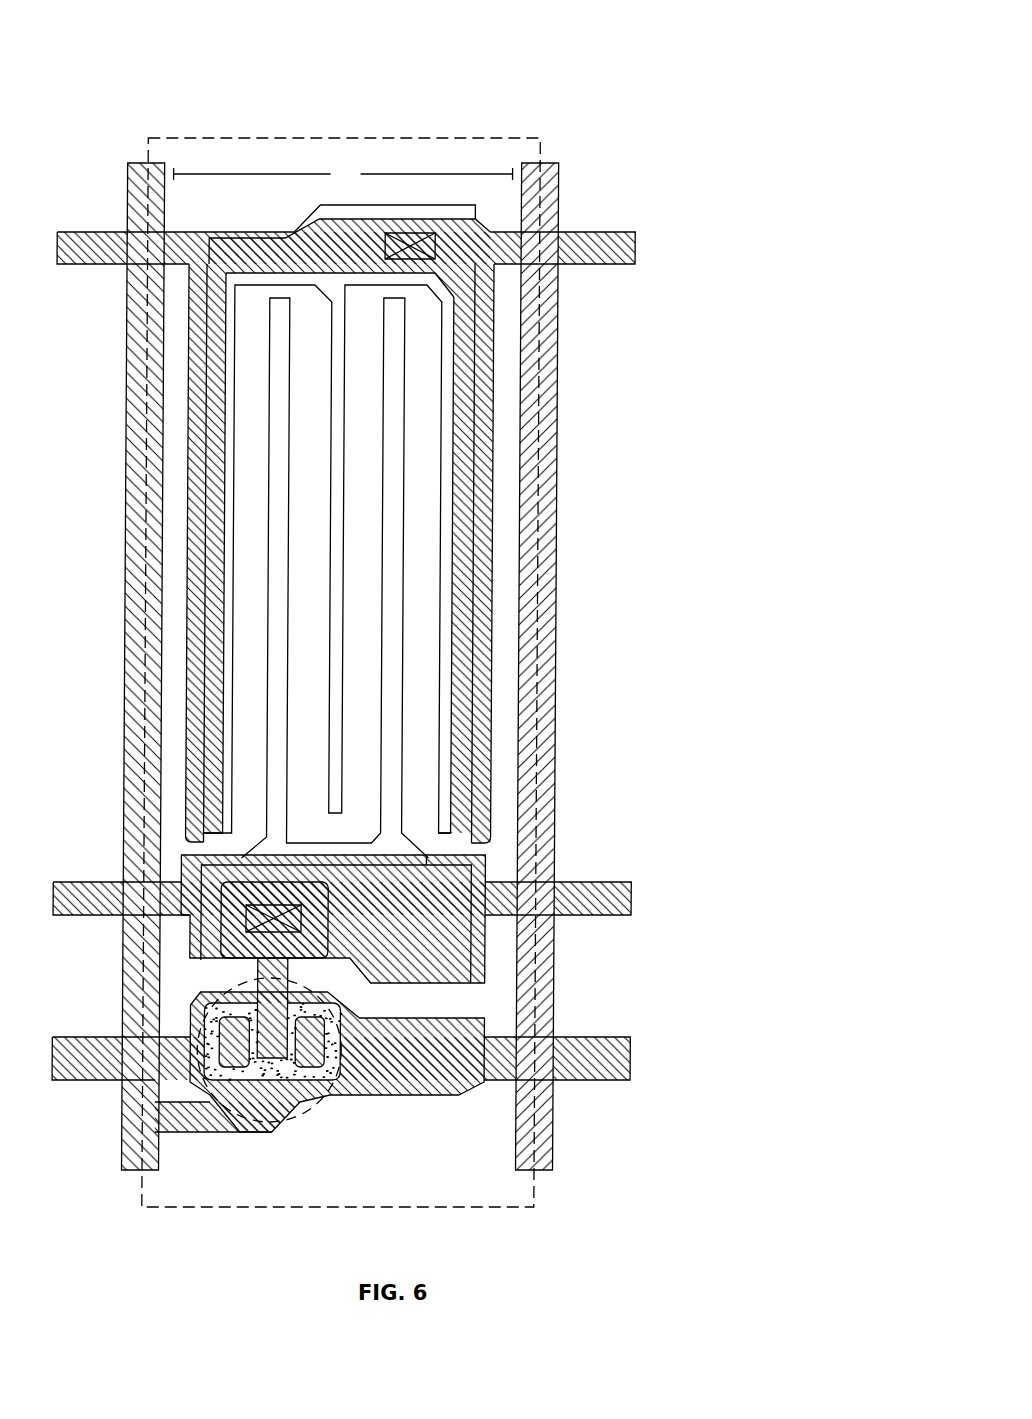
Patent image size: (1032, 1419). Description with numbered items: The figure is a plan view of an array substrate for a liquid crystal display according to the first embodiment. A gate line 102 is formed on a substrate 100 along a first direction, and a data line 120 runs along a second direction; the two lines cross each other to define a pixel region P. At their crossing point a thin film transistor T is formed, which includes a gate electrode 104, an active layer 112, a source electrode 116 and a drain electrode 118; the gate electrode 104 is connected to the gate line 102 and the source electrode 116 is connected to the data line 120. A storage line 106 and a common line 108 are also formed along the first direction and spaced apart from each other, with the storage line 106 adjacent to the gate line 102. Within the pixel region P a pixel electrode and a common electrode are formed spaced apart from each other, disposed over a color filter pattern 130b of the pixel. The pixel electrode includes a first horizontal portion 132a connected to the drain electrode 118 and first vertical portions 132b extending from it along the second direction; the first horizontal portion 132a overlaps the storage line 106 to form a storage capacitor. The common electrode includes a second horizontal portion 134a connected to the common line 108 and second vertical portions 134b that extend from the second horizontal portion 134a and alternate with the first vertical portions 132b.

The substrate 100 is at (612, 1190).
The gate line 102 is at (633, 1058).
The gate electrode 104 is at (337, 995).
The storage line 106 is at (633, 900).
The common line 108 is at (633, 240).
The active layer 112 is at (193, 1017).
The source electrode 116 is at (203, 1132).
The drain electrode 118 is at (304, 862).
The data line 120 is at (558, 645).
The pixel region 130b is at (485, 140).
The first horizontal portion 132a is at (487, 950).
The first vertical portions 132b is at (405, 715).
The second horizontal portion 134a is at (381, 205).
The second vertical portions 134b is at (483, 435).
The thin film transistor T is at (330, 1098).
The pixel region P is at (343, 176).